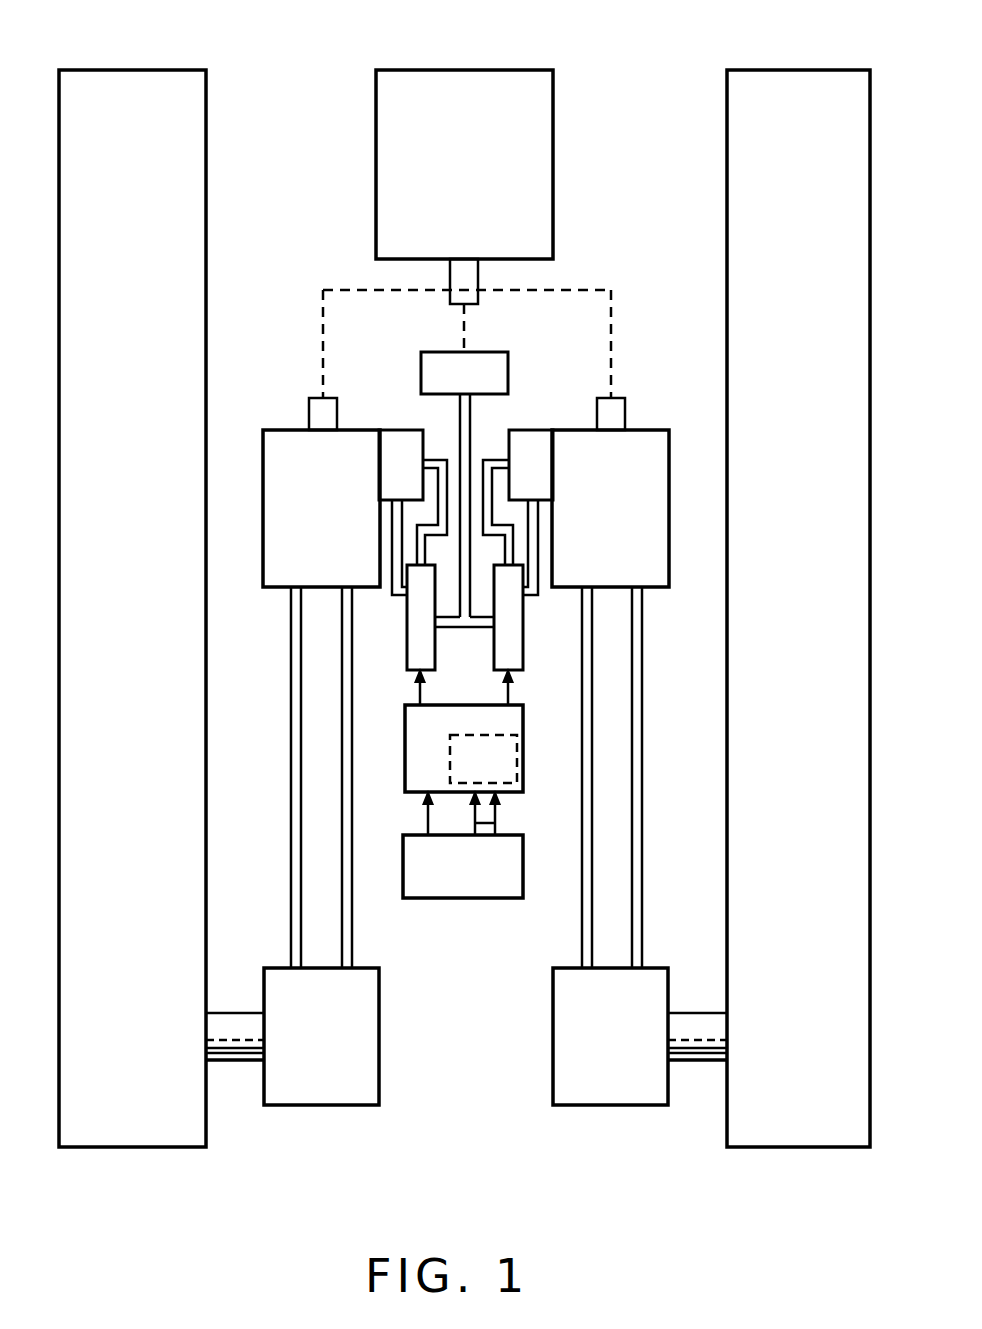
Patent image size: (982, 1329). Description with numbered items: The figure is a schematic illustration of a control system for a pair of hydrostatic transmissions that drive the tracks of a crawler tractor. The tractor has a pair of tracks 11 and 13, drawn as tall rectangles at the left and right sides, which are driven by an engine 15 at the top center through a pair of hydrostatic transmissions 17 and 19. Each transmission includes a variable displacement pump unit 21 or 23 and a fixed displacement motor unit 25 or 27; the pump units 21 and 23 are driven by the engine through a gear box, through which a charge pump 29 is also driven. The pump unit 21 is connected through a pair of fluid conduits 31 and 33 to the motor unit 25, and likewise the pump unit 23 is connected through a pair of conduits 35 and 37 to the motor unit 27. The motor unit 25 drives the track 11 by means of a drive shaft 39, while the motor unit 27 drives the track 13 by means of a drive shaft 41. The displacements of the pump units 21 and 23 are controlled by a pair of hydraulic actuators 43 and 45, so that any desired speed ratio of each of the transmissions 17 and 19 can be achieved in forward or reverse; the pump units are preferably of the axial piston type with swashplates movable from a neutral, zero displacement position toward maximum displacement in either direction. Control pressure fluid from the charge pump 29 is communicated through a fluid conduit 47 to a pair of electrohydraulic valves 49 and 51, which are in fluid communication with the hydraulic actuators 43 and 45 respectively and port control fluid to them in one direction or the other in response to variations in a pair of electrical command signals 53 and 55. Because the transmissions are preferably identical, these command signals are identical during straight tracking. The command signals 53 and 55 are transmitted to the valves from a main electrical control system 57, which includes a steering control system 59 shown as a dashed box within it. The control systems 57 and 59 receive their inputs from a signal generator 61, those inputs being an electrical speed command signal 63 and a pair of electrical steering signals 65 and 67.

The track 11 is at (133, 82).
The track 13 is at (806, 82).
The engine 15 is at (471, 82).
The hydrostatic transmission 17 is at (273, 362).
The hydrostatic transmission 19 is at (652, 362).
The variable displacement pump unit 21 is at (272, 500).
The variable displacement pump unit 23 is at (660, 500).
The fixed displacement motor unit 25 is at (360, 1015).
The fixed displacement motor unit 27 is at (567, 1018).
The charge pump 29 is at (498, 365).
The fluid conduit 31 is at (291, 752).
The fluid conduit 33 is at (343, 752).
The conduit 35 is at (583, 726).
The conduit 37 is at (642, 745).
The drive shaft 39 is at (232, 1030).
The drive shaft 41 is at (686, 1025).
The hydraulic actuator 43 is at (395, 436).
The hydraulic actuator 45 is at (531, 437).
The fluid conduit 47 is at (465, 439).
The electrohydraulic valve 49 is at (416, 630).
The electrohydraulic valve 51 is at (512, 633).
The electrical command signal 53 is at (420, 693).
The electrical command signal 55 is at (508, 693).
The main electrical control system 57 is at (418, 758).
The steering control system 59 is at (490, 772).
The signal generator 61 is at (507, 873).
The electrical speed command signal 63 is at (428, 820).
The electrical steering signal 65 is at (495, 815).
The electrical steering signal 67 is at (495, 823).